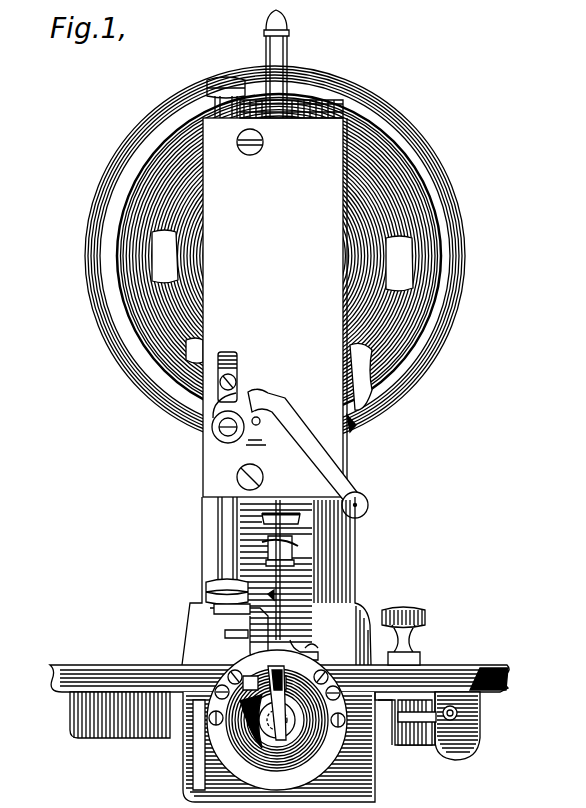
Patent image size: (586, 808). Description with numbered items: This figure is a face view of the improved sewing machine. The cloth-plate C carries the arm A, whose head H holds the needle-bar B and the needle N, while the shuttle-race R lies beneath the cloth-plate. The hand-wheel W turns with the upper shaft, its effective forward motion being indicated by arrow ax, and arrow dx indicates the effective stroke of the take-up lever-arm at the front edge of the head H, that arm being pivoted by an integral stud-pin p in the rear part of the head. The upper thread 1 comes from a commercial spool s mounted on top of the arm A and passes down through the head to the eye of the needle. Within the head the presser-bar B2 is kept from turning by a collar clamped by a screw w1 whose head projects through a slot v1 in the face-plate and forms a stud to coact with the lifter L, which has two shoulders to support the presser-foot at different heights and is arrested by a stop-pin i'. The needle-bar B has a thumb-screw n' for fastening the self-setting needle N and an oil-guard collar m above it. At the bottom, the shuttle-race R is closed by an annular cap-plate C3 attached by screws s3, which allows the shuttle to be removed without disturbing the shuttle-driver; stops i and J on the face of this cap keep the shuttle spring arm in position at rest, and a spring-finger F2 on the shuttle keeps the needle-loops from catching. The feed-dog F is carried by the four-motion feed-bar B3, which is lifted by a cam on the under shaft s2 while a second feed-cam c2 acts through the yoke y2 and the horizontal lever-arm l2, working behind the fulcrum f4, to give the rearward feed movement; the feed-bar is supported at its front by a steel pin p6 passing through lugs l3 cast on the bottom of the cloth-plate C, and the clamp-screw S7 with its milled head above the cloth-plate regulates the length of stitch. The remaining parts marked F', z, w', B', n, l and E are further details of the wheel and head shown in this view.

The fly wheel W is at (275, 256).
The arrow ax is at (168, 140).
The arrow dx is at (442, 386).
The feed-dog F is at (171, 256).
The wheel opening F' is at (399, 260).
The cam opening z is at (361, 376).
The upper thread 1 is at (358, 428).
The head H is at (275, 307).
The needle-bar B is at (283, 64).
The spool s is at (291, 100).
The yoke y2 is at (221, 89).
The slot v1 is at (237, 376).
The screw w1 is at (241, 379).
The lifter L is at (295, 453).
The pivot screw w' is at (231, 419).
The stop-pin i' is at (256, 431).
The arm A is at (203, 483).
The presser-bar B2 is at (220, 552).
The oil-guard collar m is at (287, 522).
The needle bar clamp B' is at (288, 547).
The thumb-screw n' is at (287, 563).
The needle N is at (288, 570).
The needle clamp n is at (264, 592).
The link l is at (282, 636).
The presser foot E is at (264, 633).
The stud-pin p is at (312, 649).
The spring-finger F2 is at (236, 638).
The cloth-plate C is at (271, 673).
The shuttle-race R is at (267, 748).
The annular cap-plate C3 is at (277, 720).
The feed-cam c2 is at (272, 723).
The under shaft s2 is at (225, 702).
The screws s3 is at (329, 711).
The stop i is at (250, 682).
The stop J is at (282, 703).
The clamp-screw S7 is at (414, 634).
The fulcrum f4 is at (442, 692).
The lugs l3 is at (435, 728).
The lever-arm l2 is at (420, 740).
The steel pin p6 is at (462, 710).
The four-motion feed-bar B3 is at (372, 766).